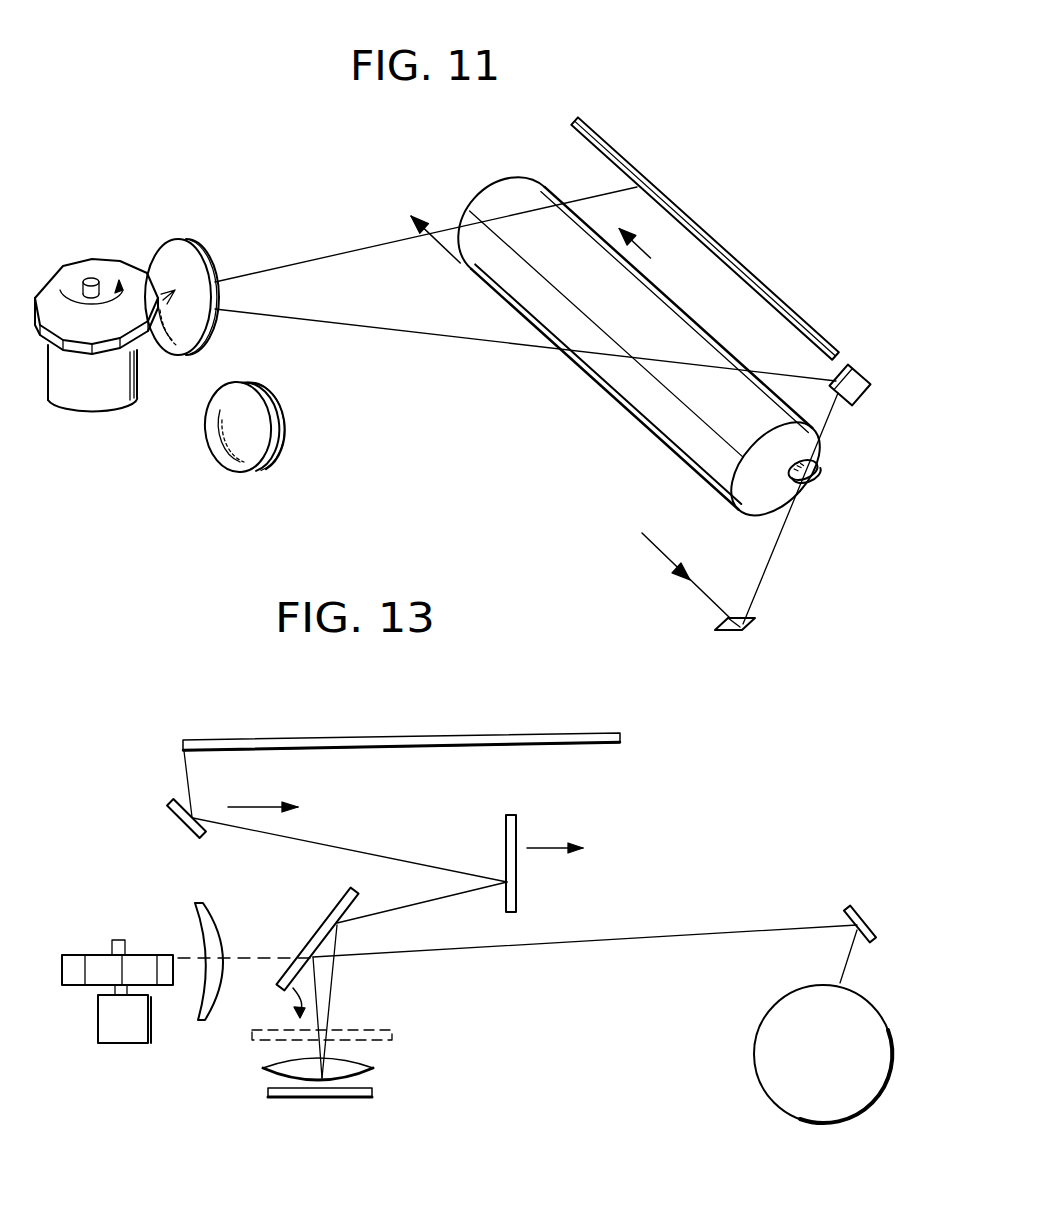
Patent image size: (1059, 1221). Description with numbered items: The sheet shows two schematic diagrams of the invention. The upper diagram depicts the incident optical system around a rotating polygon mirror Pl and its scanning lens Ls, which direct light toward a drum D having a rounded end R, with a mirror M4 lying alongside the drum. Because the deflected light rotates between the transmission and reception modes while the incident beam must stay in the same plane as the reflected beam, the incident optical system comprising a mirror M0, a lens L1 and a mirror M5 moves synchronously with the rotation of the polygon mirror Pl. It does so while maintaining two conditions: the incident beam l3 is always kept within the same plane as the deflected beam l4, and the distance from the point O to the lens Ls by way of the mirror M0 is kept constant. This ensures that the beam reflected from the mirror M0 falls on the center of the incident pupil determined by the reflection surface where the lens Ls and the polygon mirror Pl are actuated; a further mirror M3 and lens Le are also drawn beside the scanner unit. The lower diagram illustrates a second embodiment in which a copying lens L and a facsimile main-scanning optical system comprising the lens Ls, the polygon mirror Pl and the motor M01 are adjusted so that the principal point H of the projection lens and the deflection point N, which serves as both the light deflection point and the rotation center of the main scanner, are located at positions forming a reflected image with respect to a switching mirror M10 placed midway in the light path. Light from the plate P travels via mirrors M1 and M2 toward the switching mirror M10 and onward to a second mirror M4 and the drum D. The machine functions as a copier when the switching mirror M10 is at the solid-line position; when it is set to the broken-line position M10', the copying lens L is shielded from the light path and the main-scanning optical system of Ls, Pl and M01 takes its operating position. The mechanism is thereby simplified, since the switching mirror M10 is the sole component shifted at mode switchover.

In FIG. 11, the polygon mirror Pl is at (108, 272).
In FIG. 13, the polygon mirror Pl is at (98, 950).
In FIG. 11, the deflection point N is at (172, 295).
In FIG. 13, the deflection point N is at (176, 963).
In FIG. 11, the scanning lens Ls is at (172, 343).
In FIG. 13, the scanning lens Ls is at (218, 928).
In FIG. 11, the motor M01 is at (97, 393).
In FIG. 13, the motor M01 is at (122, 1033).
In FIG. 11, the mirror M3 is at (225, 453).
In FIG. 13, the mirror M3 is at (375, 1092).
In FIG. 11, the lens Le is at (273, 457).
In FIG. 13, the lens Le is at (372, 1062).
In FIG. 11, the deflected beam l4 is at (365, 248).
In FIG. 11, the incident beam l3 is at (455, 337).
In FIG. 11, the drum end R is at (550, 185).
In FIG. 11, the drum D is at (632, 405).
In FIG. 13, the drum D is at (762, 1012).
In FIG. 11, the mirror M4 is at (760, 280).
In FIG. 13, the mirror M4 is at (860, 904).
In FIG. 11, the mirror M0 is at (857, 362).
In FIG. 11, the object point O is at (833, 410).
In FIG. 11, the lens L1 is at (812, 487).
In FIG. 11, the mirror M5 is at (747, 627).
In FIG. 13, the original plate P is at (405, 737).
In FIG. 13, the mirror M1 is at (172, 817).
In FIG. 13, the mirror M2 is at (388, 855).
In FIG. 13, the switching mirror M10 is at (566, 971).
In FIG. 13, the shifted switching mirror position M10' is at (346, 1009).
In FIG. 13, the copying lens L is at (440, 1056).
In FIG. 13, the principal point H is at (322, 1085).